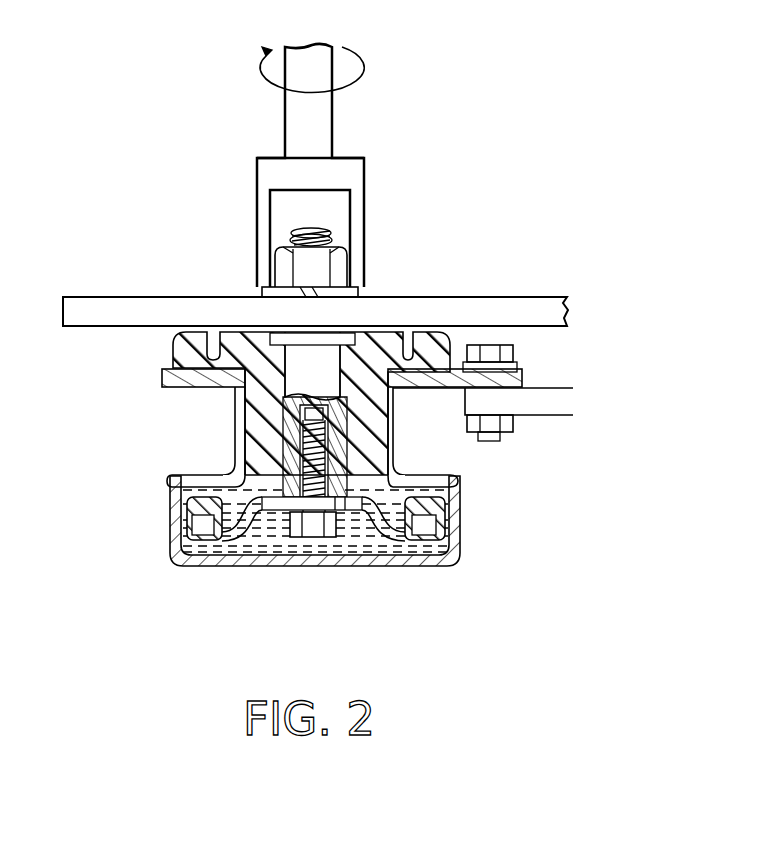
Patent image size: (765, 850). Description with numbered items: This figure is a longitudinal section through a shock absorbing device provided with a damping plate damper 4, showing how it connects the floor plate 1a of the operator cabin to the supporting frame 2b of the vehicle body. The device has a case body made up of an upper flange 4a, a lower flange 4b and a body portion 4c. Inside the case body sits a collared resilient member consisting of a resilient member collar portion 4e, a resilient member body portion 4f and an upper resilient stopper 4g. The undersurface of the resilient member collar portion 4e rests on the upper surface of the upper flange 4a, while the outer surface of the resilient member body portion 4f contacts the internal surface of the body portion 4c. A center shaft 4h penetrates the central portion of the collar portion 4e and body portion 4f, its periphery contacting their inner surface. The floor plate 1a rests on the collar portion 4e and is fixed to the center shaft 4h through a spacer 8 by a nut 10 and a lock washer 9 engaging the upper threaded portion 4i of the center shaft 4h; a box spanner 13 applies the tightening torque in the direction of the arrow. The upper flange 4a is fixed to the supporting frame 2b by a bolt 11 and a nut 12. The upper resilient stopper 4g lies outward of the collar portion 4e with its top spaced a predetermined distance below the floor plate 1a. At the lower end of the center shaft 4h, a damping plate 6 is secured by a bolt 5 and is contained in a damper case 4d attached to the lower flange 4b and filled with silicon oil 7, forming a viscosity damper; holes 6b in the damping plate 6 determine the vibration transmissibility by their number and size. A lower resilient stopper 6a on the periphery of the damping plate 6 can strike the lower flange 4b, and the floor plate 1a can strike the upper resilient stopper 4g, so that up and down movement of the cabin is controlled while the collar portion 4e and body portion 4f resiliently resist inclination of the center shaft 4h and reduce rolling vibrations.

The floor plate 1a is at (92, 297).
The supporting frame 2b is at (550, 408).
The damping plate damper 4 is at (466, 546).
The upper flange 4a is at (165, 379).
The lower flange 4b is at (210, 475).
The body portion 4c is at (240, 432).
The damper case 4d is at (426, 560).
The resilient member collar portion 4e is at (415, 335).
The resilient member body portion 4f is at (390, 452).
The upper resilient stopper 4g is at (178, 356).
The center shaft 4h is at (333, 350).
The upper threaded portion 4i is at (302, 232).
The bolt 5 is at (320, 540).
The damping plate 6 is at (238, 543).
The lower resilient stopper 6a is at (185, 520).
The holes 6b is at (356, 540).
The silicon oil 7 is at (272, 542).
The spacer 8 is at (200, 297).
The lock washer 9 is at (262, 296).
The nut 10 is at (345, 247).
The bolt 11 is at (515, 352).
The nut 12 is at (505, 428).
The box spanner 13 is at (332, 135).